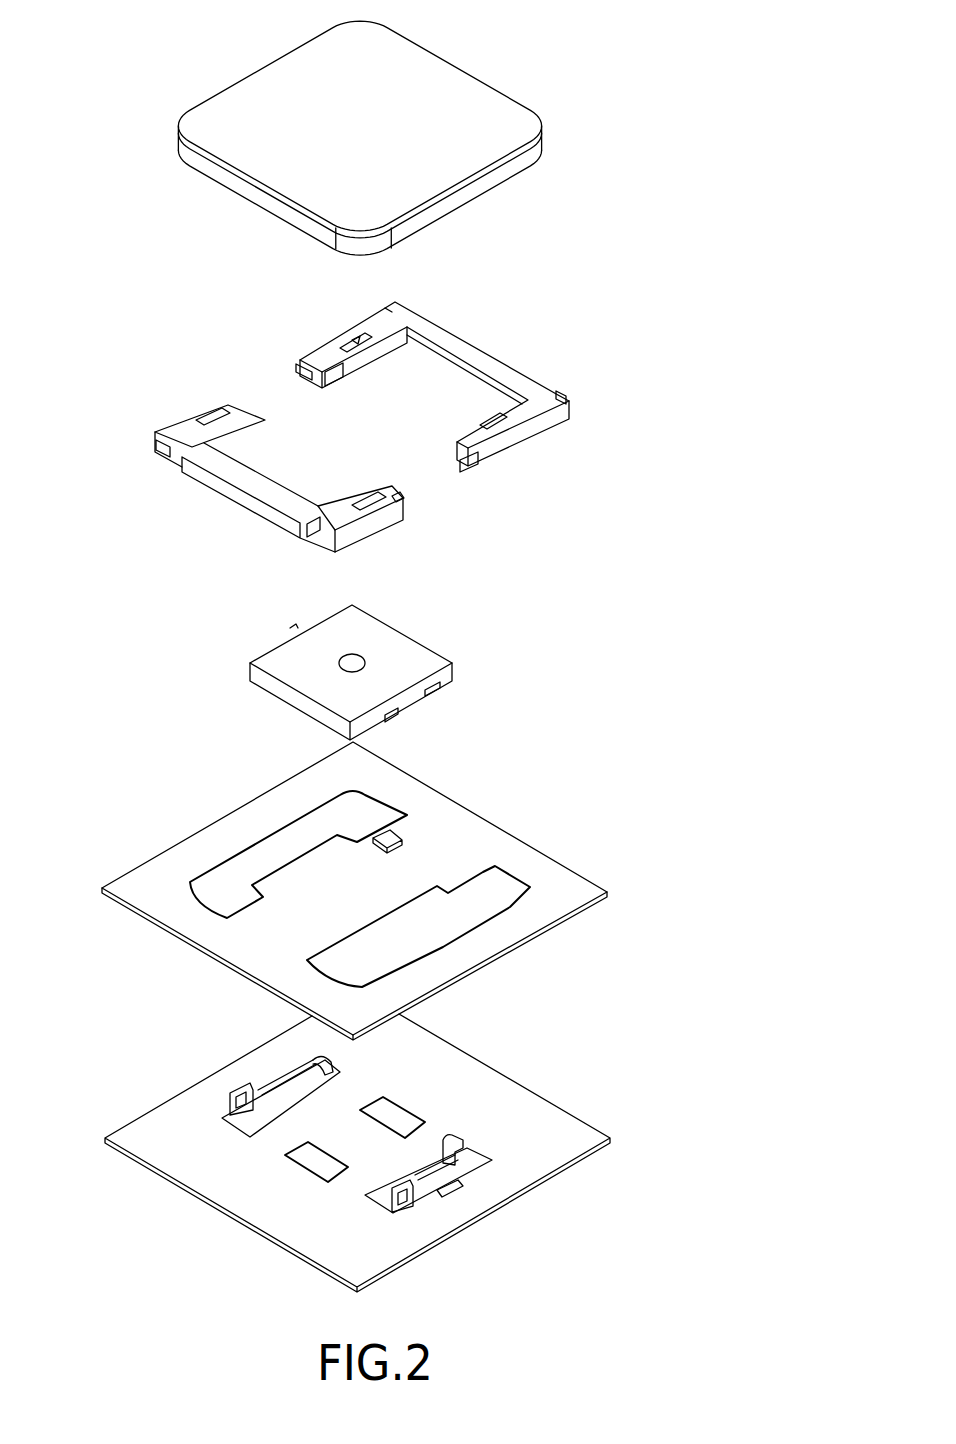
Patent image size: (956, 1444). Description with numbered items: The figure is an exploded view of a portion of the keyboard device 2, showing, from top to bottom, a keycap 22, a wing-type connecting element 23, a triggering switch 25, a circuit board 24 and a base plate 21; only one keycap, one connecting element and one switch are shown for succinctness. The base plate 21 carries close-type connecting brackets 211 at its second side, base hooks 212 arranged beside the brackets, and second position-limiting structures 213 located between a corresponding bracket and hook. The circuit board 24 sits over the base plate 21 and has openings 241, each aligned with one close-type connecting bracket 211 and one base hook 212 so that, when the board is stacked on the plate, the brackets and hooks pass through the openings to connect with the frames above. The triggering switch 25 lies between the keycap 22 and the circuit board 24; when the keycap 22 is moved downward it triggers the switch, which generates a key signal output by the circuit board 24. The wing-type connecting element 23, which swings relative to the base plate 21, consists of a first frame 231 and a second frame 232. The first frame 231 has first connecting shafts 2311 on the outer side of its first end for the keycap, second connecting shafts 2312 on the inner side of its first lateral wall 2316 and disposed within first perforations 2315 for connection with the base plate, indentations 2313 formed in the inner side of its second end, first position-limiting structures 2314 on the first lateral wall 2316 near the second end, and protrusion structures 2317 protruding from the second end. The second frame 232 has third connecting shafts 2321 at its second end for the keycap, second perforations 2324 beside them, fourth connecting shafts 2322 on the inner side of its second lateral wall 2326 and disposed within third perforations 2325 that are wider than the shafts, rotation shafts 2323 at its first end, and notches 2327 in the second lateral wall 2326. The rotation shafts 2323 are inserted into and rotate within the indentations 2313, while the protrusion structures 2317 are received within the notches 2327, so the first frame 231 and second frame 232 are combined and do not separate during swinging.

The keyboard device 2 is at (177, 31).
The base plate 21 is at (357, 1153).
The close-type connecting bracket 211 is at (378, 1203).
The base hook 212 is at (455, 1145).
The second position-limiting structure 213 is at (455, 1188).
The keycap 22 is at (475, 108).
The wing-type connecting element 23 is at (180, 320).
The first frame 231 is at (426, 402).
The first connecting shaft 2311 is at (556, 394).
The second connecting shaft 2312 is at (342, 350).
The indentation 2313 is at (338, 370).
The first position-limiting structure 2314 is at (483, 468).
The first perforation 2315 is at (342, 348).
The first lateral wall 2316 is at (527, 437).
The protrusion structure 2317 is at (300, 363).
The second frame 232 is at (289, 474).
The third connecting shaft 2321 is at (170, 445).
The fourth connecting shaft 2322 is at (203, 420).
The rotation shaft 2323 is at (397, 500).
The second perforation 2324 is at (307, 527).
The third perforation 2325 is at (397, 500).
The second lateral wall 2326 is at (357, 530).
The notch 2327 is at (227, 405).
The circuit board 24 is at (354, 891).
The opening 241 is at (495, 887).
The triggering switch 25 is at (410, 658).